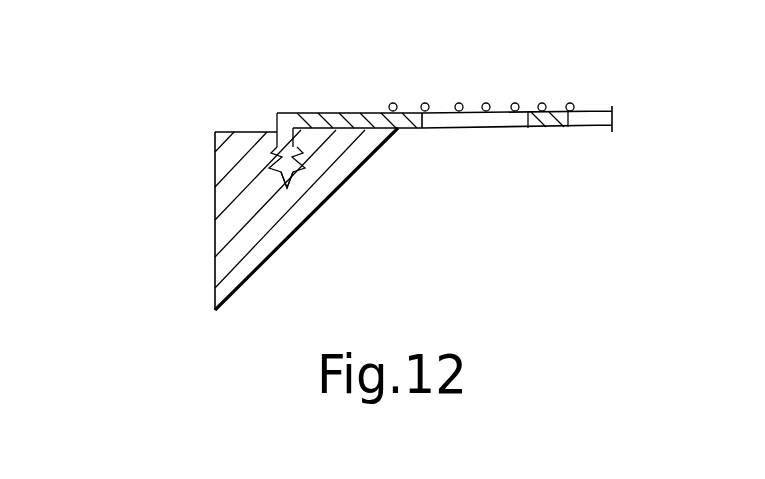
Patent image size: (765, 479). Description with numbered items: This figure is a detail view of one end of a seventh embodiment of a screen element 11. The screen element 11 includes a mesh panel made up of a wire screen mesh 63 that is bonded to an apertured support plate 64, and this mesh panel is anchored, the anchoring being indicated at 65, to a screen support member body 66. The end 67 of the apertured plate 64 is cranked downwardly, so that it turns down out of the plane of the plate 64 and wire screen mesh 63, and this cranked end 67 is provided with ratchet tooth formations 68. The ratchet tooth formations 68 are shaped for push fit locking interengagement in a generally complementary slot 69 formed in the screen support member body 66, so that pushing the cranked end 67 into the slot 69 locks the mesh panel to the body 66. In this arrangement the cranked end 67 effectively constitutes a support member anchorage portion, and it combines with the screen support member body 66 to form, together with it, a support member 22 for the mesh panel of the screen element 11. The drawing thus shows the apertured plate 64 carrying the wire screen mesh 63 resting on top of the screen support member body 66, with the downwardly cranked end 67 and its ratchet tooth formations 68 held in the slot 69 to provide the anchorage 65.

The screen element 11 is at (556, 98).
The support member 22 is at (298, 222).
The wire screen mesh 63 is at (484, 103).
The apertured support plate 64 is at (552, 128).
The anchorage 65 is at (268, 113).
The screen support member body 66 is at (214, 160).
The cranked end 67 is at (336, 113).
The ratchet tooth formations 68 is at (285, 168).
The slot 69 is at (300, 157).